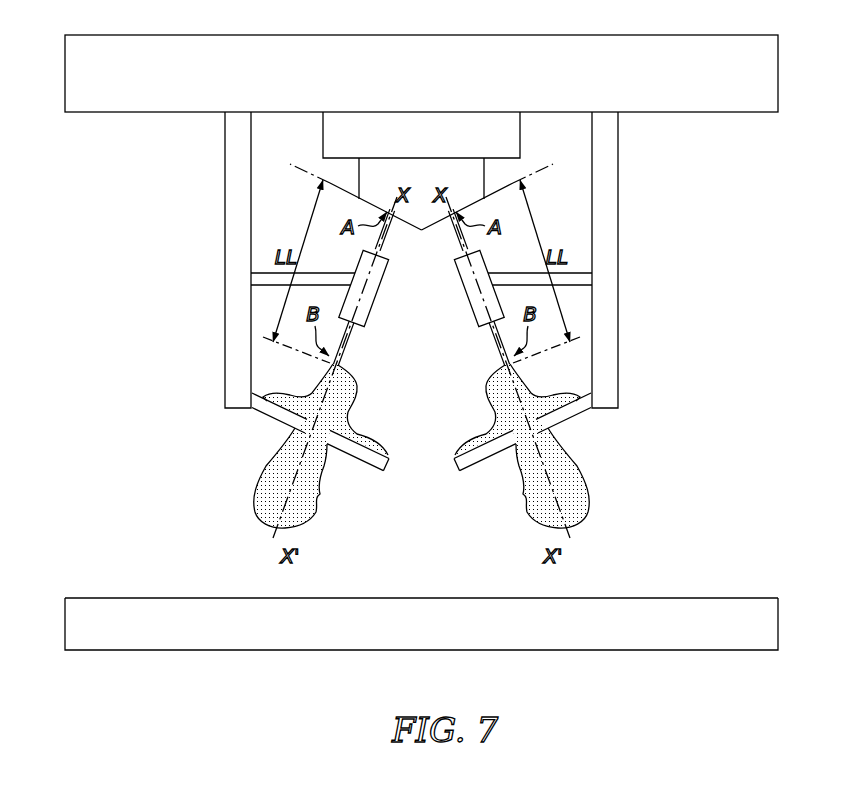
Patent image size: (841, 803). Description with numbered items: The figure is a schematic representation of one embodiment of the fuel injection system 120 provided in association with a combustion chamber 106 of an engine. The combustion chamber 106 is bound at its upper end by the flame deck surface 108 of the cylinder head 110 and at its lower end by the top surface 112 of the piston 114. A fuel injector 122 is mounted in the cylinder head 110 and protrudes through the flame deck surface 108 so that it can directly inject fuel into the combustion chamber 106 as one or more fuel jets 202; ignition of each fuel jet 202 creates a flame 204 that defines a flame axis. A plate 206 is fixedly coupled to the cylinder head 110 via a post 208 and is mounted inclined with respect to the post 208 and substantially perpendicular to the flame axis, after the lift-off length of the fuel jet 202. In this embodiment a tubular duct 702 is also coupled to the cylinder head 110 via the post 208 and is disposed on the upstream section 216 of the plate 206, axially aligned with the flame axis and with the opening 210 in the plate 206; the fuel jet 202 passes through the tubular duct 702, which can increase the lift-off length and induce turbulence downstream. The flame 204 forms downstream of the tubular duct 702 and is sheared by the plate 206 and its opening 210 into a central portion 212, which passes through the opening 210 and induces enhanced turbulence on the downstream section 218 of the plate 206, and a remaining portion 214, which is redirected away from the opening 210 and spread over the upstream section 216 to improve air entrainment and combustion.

The cylinder head 110 is at (406, 85).
The flame deck surface 108 is at (740, 113).
The fuel injector 122 is at (406, 146).
The post 208 is at (225, 180).
The fuel injection system 120 is at (213, 296).
The tubular duct 702 is at (372, 305).
The fuel jet 202 is at (350, 338).
The flame 204 is at (313, 367).
The plate 206 is at (263, 418).
The opening 210 is at (295, 428).
The central portion 212 is at (521, 497).
The upstream section 216 is at (284, 390).
The downstream section 218 is at (240, 508).
The remaining portion 214 is at (370, 435).
The combustion chamber 106 is at (406, 588).
The piston 114 is at (406, 635).
The top surface 112 is at (742, 598).